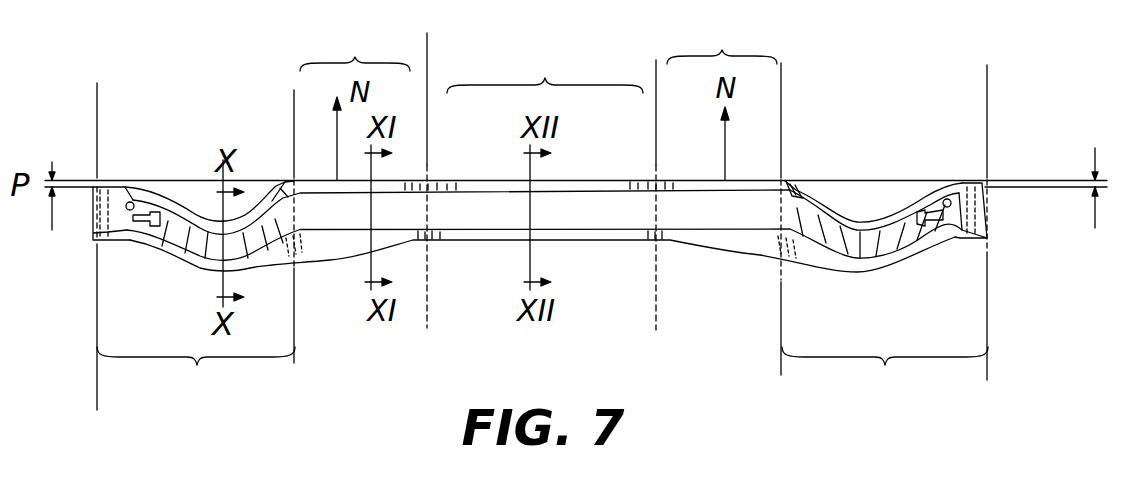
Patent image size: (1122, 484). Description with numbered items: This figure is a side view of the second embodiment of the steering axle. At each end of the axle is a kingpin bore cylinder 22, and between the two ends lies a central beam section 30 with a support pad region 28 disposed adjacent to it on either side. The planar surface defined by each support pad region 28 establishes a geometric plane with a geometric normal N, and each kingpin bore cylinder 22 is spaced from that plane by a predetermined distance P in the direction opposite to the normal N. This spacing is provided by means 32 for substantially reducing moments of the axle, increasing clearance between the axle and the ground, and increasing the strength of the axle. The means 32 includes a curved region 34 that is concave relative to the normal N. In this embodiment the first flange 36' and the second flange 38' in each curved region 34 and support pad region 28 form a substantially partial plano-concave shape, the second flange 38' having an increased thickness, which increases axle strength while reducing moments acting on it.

The kingpin bore cylinder 22 is at (93, 238).
The support pad region 28 is at (538, 44).
The central beam section 30 is at (545, 71).
The means for reducing moments, increasing ground clearance and strength 32 is at (542, 375).
The curved region 34 is at (199, 196).
The first flange 36' is at (543, 153).
The second flange 38' is at (544, 266).